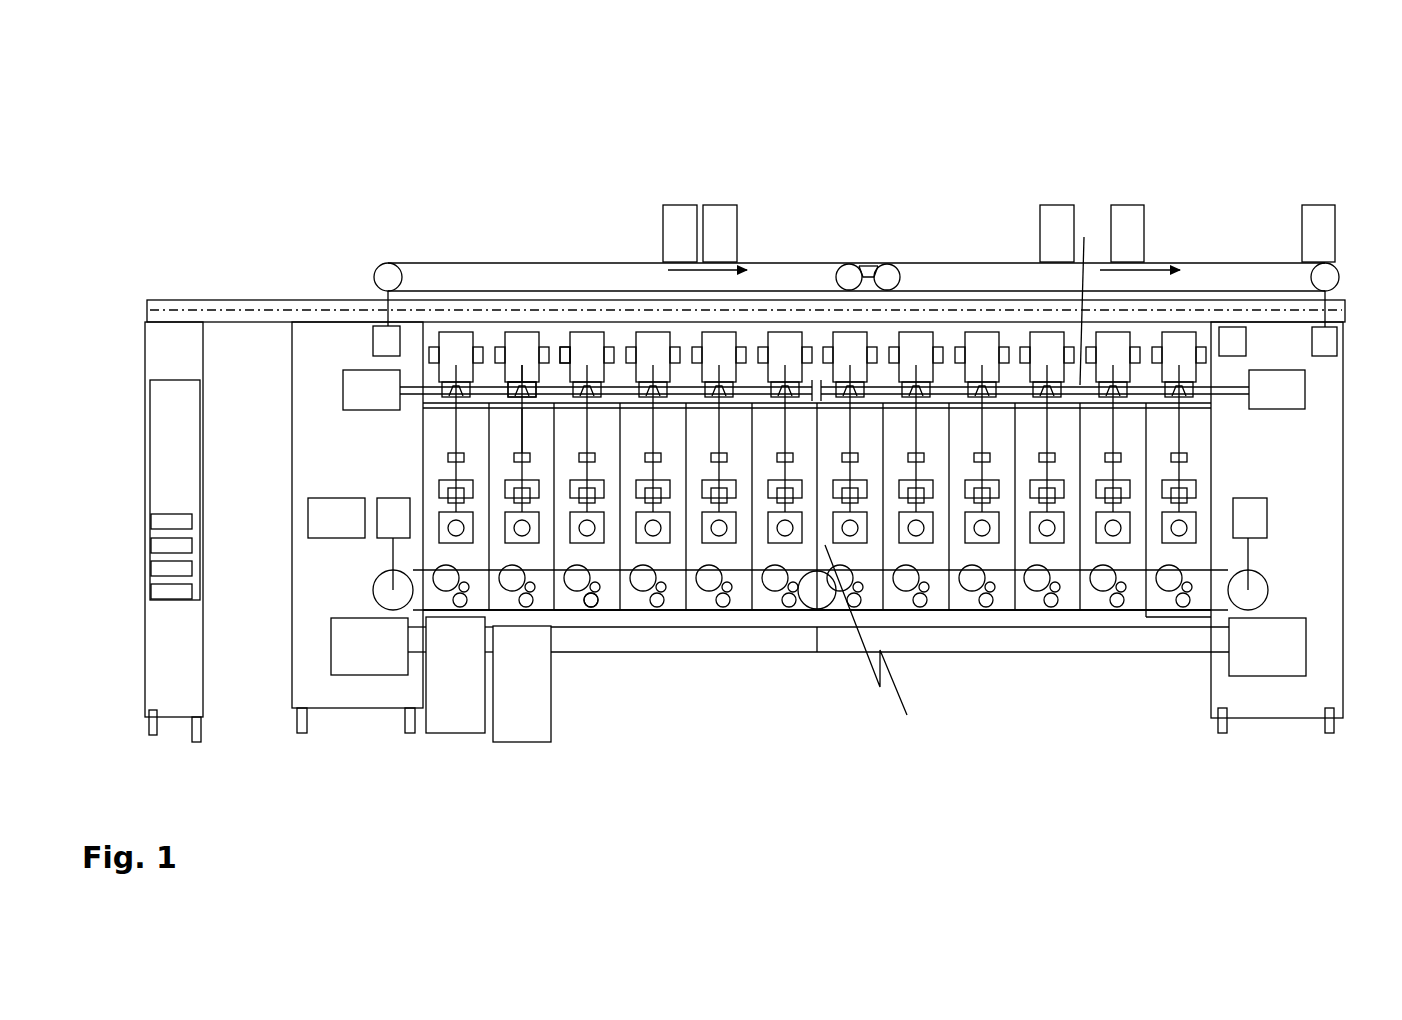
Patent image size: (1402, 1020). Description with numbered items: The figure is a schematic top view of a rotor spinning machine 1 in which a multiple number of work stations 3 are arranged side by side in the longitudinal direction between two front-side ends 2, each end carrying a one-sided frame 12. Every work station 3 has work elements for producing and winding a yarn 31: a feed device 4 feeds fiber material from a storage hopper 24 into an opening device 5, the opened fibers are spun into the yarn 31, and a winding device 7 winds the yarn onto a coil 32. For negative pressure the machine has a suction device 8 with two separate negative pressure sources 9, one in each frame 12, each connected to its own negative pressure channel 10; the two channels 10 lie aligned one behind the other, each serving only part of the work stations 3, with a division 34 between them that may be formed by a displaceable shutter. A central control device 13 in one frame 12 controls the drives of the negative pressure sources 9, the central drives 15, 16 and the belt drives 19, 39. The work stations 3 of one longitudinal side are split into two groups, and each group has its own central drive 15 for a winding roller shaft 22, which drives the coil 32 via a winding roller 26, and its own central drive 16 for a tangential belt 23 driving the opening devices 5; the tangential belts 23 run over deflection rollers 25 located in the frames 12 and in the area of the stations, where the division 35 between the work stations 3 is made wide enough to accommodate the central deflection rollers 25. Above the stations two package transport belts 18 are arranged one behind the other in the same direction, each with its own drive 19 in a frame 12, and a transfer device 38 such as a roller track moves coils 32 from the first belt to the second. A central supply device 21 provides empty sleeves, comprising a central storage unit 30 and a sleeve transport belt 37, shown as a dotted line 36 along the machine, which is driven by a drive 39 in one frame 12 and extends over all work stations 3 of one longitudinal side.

The rotor spinning machine 1 is at (921, 256).
The front-side end 2 is at (290, 298).
The work station 3 is at (503, 427).
The feed device 4 is at (596, 613).
The opening device 5 is at (575, 612).
The winding device 7 is at (518, 383).
The suction device 8 is at (1110, 652).
The negative pressure source 9 is at (383, 650).
The negative pressure channel 10 is at (759, 655).
The frame 12 is at (328, 430).
The central control device 13 is at (328, 527).
The central drive for winding roller shaft 15 is at (358, 390).
The central drive for tangential belt 16 is at (378, 503).
The package transport belt 18 is at (791, 262).
The drive of package transport belt 19 is at (385, 342).
The central supply device 21 is at (165, 633).
The winding roller shaft 22 is at (747, 396).
The tangential belt 23 is at (668, 572).
The storage hopper 24 is at (518, 725).
The deflection roller 25 is at (392, 593).
The winding roller 26 is at (520, 437).
The central storage unit 30 is at (158, 480).
The yarn 31 is at (567, 353).
The coil 32 is at (530, 365).
The division 34 is at (813, 652).
The division of the work stations 35 is at (878, 649).
The machine center line 36 is at (975, 312).
The sleeve transport belt 37 is at (157, 590).
The transfer device 38 is at (871, 268).
The drive of sleeve transport belt 39 is at (1233, 340).